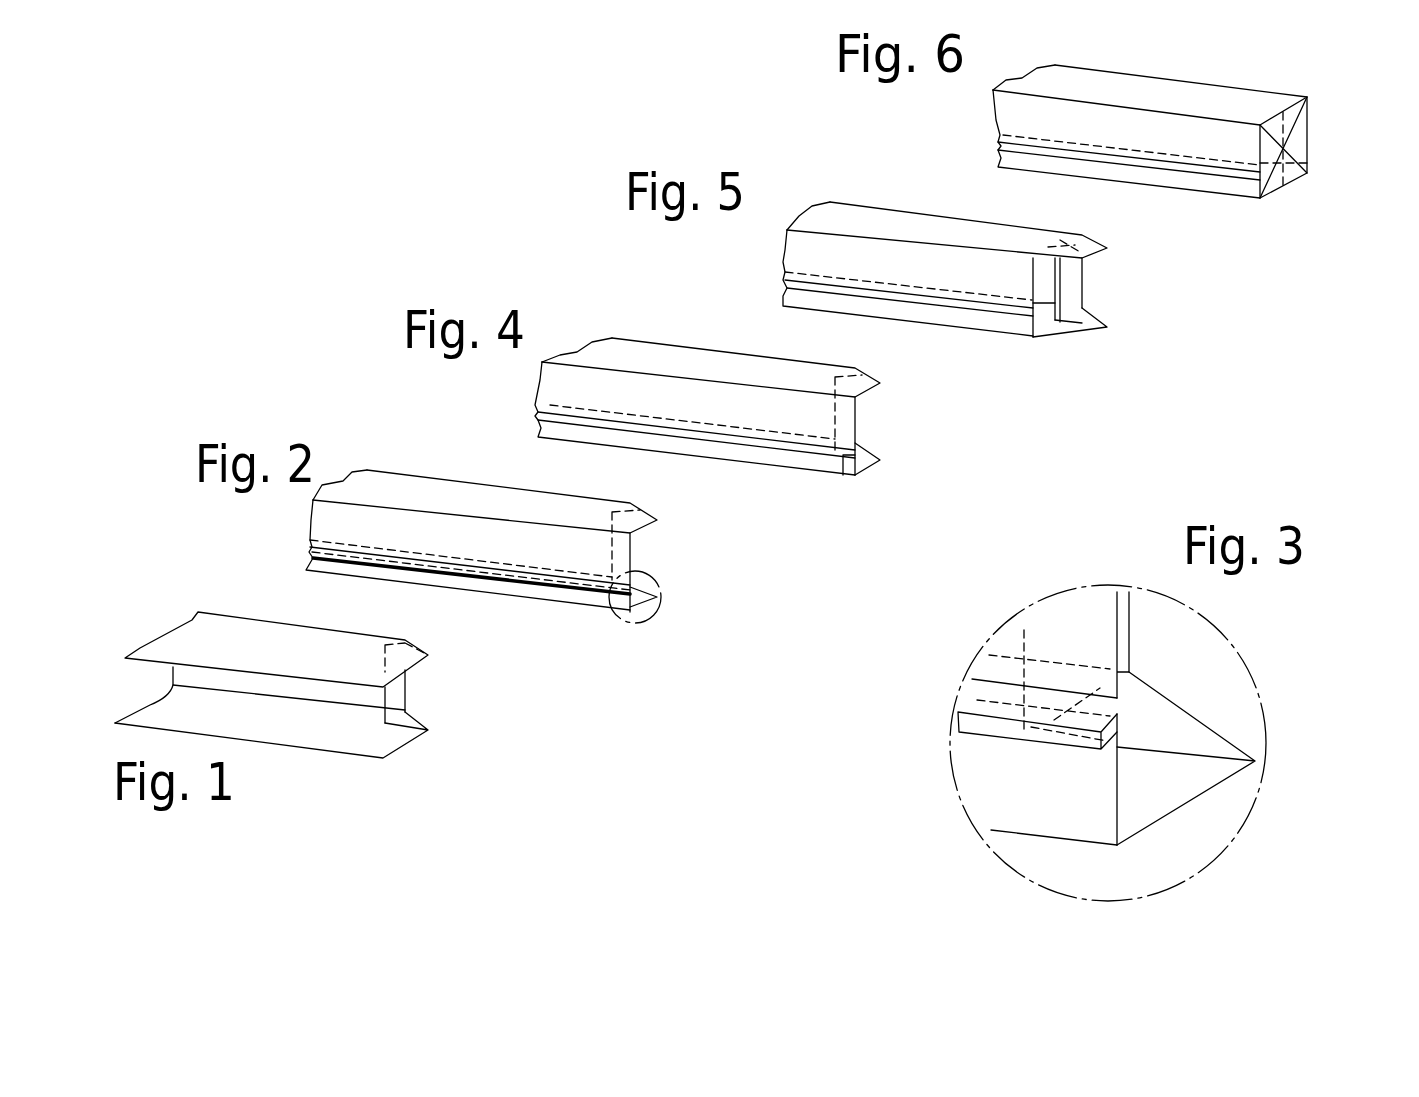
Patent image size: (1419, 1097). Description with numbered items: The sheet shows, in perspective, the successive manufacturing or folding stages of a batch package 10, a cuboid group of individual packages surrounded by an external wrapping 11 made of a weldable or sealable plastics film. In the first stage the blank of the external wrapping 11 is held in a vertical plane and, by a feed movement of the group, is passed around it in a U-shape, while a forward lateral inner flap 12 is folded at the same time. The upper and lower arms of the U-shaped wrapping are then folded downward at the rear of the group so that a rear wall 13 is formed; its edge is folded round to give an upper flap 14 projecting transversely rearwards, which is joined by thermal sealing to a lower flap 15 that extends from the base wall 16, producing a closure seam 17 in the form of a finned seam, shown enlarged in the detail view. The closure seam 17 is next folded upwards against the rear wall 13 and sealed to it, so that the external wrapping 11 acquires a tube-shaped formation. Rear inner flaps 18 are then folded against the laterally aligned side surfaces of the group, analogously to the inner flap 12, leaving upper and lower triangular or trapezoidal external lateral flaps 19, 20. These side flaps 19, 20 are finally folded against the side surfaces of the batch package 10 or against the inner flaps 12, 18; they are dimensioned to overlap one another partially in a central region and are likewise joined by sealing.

In FIG. 1, the batch package 10 is at (304, 734).
In FIG. 2, the batch package 10 is at (463, 593).
In FIG. 4, the batch package 10 is at (705, 456).
In FIG. 5, the batch package 10 is at (925, 319).
In FIG. 6, the batch package 10 is at (1187, 166).
In FIG. 3, the batch package 10 is at (1103, 743).
In FIG. 1, the external wrapping 11 is at (377, 633).
In FIG. 2, the external wrapping 11 is at (472, 483).
In FIG. 4, the external wrapping 11 is at (670, 345).
In FIG. 6, the external wrapping 11 is at (1202, 78).
In FIG. 1, the forward lateral inner flap 12 is at (397, 690).
In FIG. 4, the forward lateral inner flap 12 is at (835, 422).
In FIG. 5, the forward lateral inner flap 12 is at (1077, 288).
In FIG. 3, the forward lateral inner flap 12 is at (1124, 641).
In FIG. 2, the rear wall 13 is at (333, 511).
In FIG. 4, the rear wall 13 is at (553, 387).
In FIG. 5, the rear wall 13 is at (803, 250).
In FIG. 6, the rear wall 13 is at (1222, 147).
In FIG. 2, the upper flap 14 is at (595, 577).
In FIG. 4, the upper flap 14 is at (880, 460).
In FIG. 3, the upper flap 14 is at (974, 688).
In FIG. 2, the lower flap 15 is at (623, 602).
In FIG. 4, the lower flap 15 is at (845, 477).
In FIG. 3, the lower flap 15 is at (998, 741).
In FIG. 1, the base wall 16 is at (395, 738).
In FIG. 5, the base wall 16 is at (1023, 338).
In FIG. 3, the base wall 16 is at (1159, 765).
In FIG. 2, the closure seam 17 is at (523, 582).
In FIG. 4, the closure seam 17 is at (750, 440).
In FIG. 5, the closure seam 17 is at (878, 297).
In FIG. 6, the closure seam 17 is at (1053, 152).
In FIG. 5, the rear inner flaps 18 is at (1043, 278).
In FIG. 5, the upper external lateral flap 19 is at (1093, 240).
In FIG. 6, the upper external lateral flap 19 is at (1288, 127).
In FIG. 5, the lower external lateral flap 20 is at (1107, 327).
In FIG. 6, the lower external lateral flap 20 is at (1308, 163).